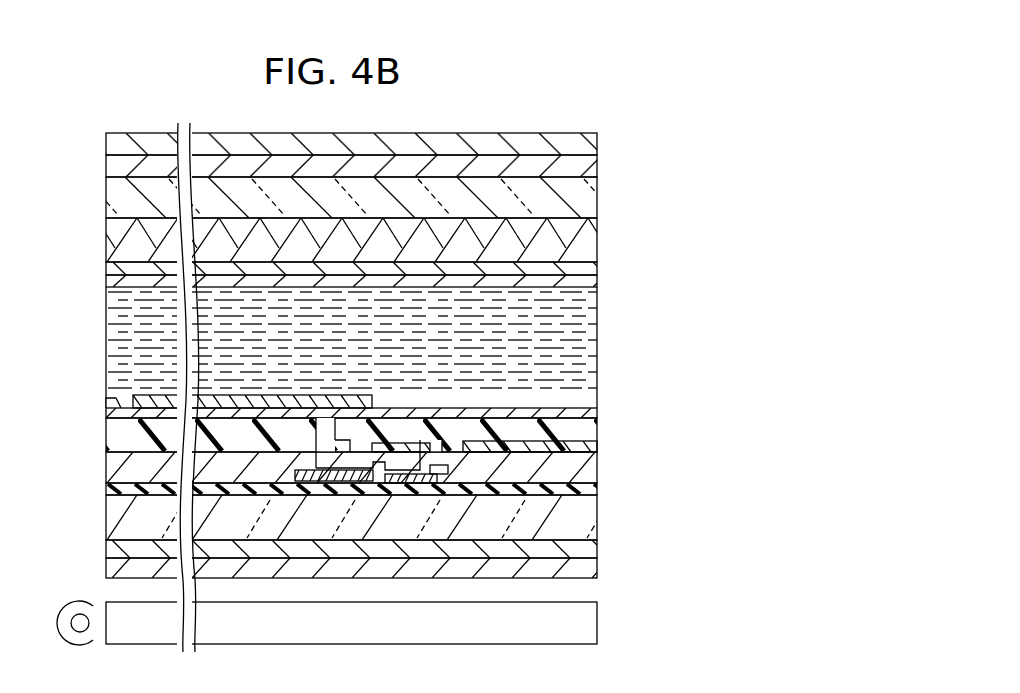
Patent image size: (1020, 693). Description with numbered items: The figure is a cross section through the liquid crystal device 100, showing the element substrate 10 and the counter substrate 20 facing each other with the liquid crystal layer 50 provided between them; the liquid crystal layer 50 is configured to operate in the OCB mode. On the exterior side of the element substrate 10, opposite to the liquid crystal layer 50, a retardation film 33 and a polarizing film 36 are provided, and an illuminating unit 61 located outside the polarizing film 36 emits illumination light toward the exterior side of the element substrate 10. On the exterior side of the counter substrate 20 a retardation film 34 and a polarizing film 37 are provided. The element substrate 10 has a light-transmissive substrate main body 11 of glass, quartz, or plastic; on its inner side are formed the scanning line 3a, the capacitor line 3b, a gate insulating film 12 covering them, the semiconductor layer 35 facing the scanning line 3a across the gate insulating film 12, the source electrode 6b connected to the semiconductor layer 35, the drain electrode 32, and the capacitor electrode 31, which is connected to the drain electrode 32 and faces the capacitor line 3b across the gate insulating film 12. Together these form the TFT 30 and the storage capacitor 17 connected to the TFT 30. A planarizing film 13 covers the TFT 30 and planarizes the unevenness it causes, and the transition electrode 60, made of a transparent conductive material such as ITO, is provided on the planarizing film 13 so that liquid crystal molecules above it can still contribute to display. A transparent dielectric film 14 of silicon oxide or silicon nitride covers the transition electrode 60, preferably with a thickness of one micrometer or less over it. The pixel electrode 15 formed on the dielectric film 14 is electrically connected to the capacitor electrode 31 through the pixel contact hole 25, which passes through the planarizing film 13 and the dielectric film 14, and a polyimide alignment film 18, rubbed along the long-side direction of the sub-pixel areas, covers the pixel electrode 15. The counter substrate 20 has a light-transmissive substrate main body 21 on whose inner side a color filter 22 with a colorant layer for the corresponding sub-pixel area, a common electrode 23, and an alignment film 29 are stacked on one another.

The liquid crystal device 100 is at (575, 124).
The counter substrate 20 is at (97, 287).
The element substrate 10 is at (97, 408).
The polarizing film 37 is at (597, 143).
The retardation film 34 is at (597, 166).
The substrate main body 21 is at (597, 200).
The color filter 22 is at (597, 236).
The common electrode 23 is at (597, 270).
The alignment film 29 is at (597, 282).
The liquid crystal layer 50 is at (597, 340).
The pixel electrode 15 is at (133, 396).
The alignment film 18 is at (597, 412).
The dielectric film 14 is at (597, 432).
The transition electrode 60 is at (597, 447).
The planarizing film 13 is at (597, 467).
The gate insulating film 12 is at (597, 489).
The substrate main body 11 is at (597, 517).
The retardation film 33 is at (597, 549).
The polarizing film 36 is at (597, 568).
The illuminating unit 61 is at (597, 623).
The capacitor line 3b is at (293, 476).
The source electrode 6b is at (455, 472).
The scanning line 3a is at (470, 470).
The semiconductor layer 35 is at (410, 452).
The storage capacitor 17 is at (308, 458).
The pixel contact hole 25 is at (333, 462).
The capacitor electrode 31 is at (360, 445).
The drain electrode 32 is at (398, 418).
The TFT 30 is at (424, 470).